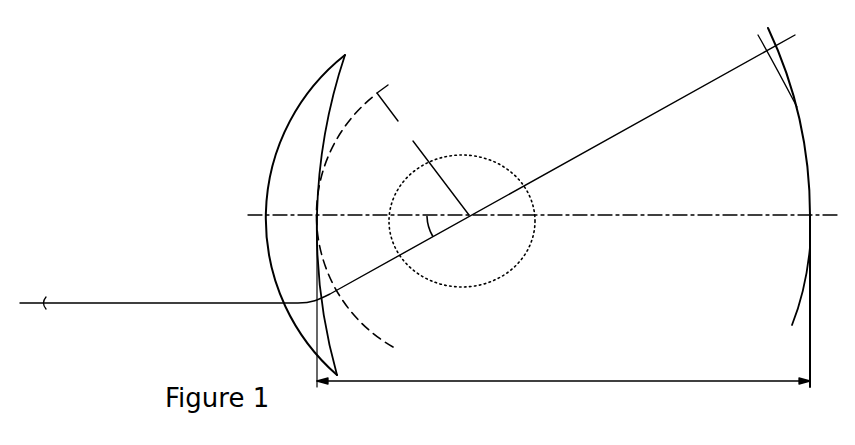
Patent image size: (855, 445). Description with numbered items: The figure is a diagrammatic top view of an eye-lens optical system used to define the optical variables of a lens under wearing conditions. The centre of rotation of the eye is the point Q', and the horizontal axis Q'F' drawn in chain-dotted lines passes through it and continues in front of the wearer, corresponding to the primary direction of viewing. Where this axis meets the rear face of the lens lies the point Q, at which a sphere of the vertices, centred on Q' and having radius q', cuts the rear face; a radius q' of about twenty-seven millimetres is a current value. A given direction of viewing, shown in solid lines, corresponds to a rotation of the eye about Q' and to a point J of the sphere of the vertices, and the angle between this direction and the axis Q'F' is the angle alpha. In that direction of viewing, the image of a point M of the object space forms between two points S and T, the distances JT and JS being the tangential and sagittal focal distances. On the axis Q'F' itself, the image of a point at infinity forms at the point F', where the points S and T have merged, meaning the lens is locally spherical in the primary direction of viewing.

The point M of the object space M is at (407, 193).
The point Q is at (305, 221).
The centre of rotation of the eye Q' is at (462, 221).
The radius q' of the sphere of the vertices q' is at (423, 150).
The point J of the sphere of the vertices J is at (354, 220).
The point S is at (789, 197).
The point T is at (759, 67).
The point F' is at (544, 205).